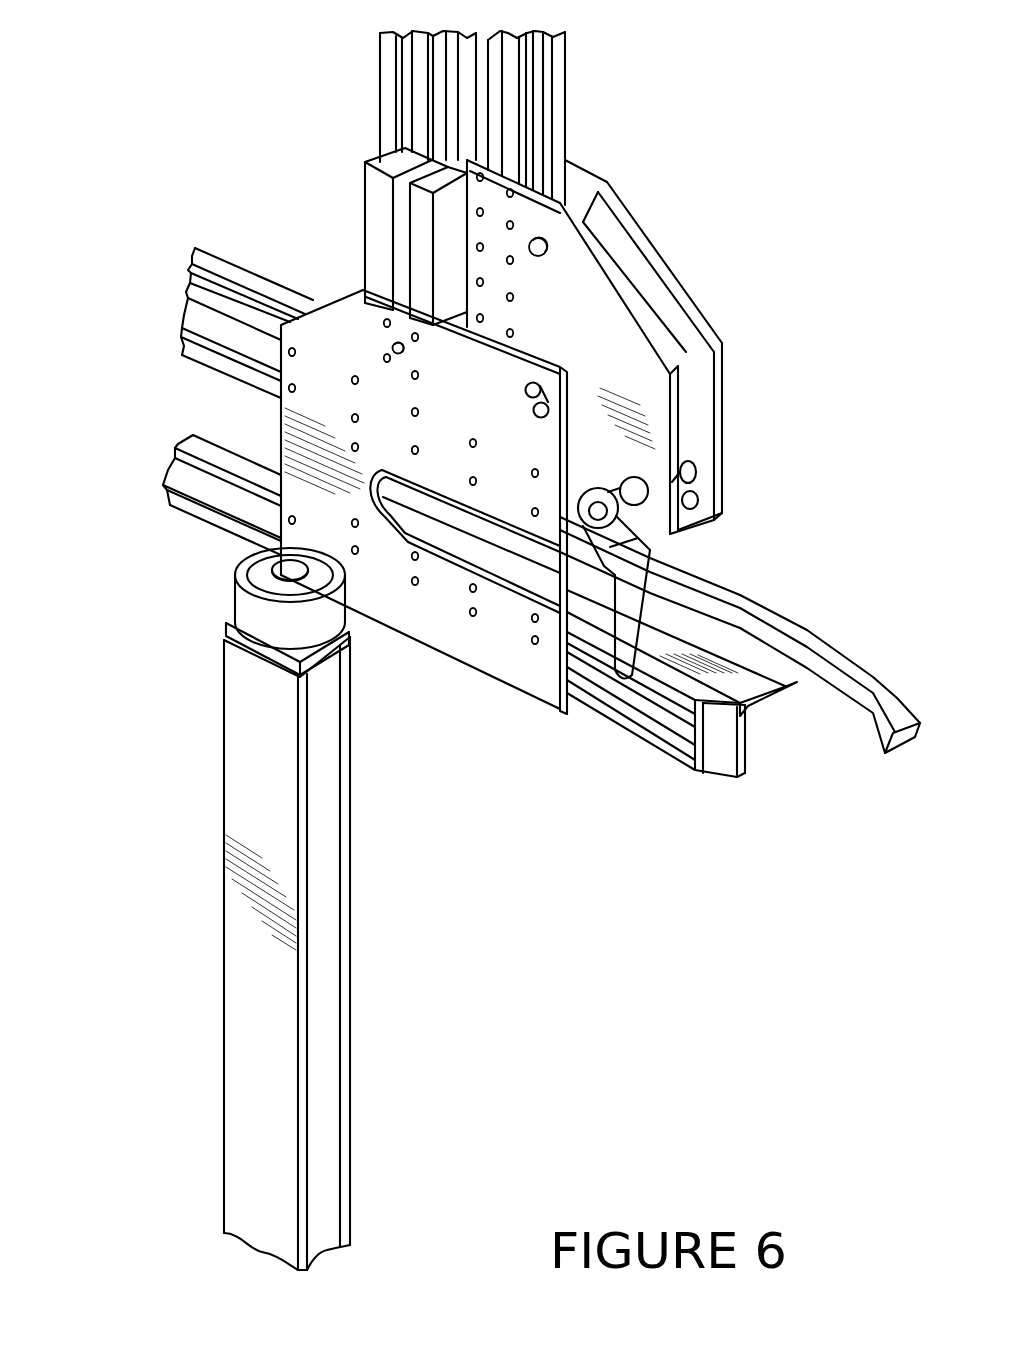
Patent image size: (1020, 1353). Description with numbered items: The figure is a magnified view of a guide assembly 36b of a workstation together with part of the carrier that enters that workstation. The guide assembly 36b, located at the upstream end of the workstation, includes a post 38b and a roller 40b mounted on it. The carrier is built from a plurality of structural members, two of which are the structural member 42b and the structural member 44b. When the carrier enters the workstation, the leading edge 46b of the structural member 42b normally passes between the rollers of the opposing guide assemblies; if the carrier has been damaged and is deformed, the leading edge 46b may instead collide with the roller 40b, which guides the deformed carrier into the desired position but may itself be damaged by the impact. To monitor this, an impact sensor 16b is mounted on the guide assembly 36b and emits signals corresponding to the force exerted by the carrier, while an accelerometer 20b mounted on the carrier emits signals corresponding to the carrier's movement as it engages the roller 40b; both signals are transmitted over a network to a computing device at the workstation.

The impact sensor 16b is at (212, 800).
The accelerometer 20b is at (350, 91).
The guide assembly 36b is at (418, 1032).
The post 38b is at (262, 1086).
The roller 40b is at (242, 598).
The structural member 42b is at (228, 503).
The structural member 44b is at (287, 447).
The leading edge 46b is at (738, 733).